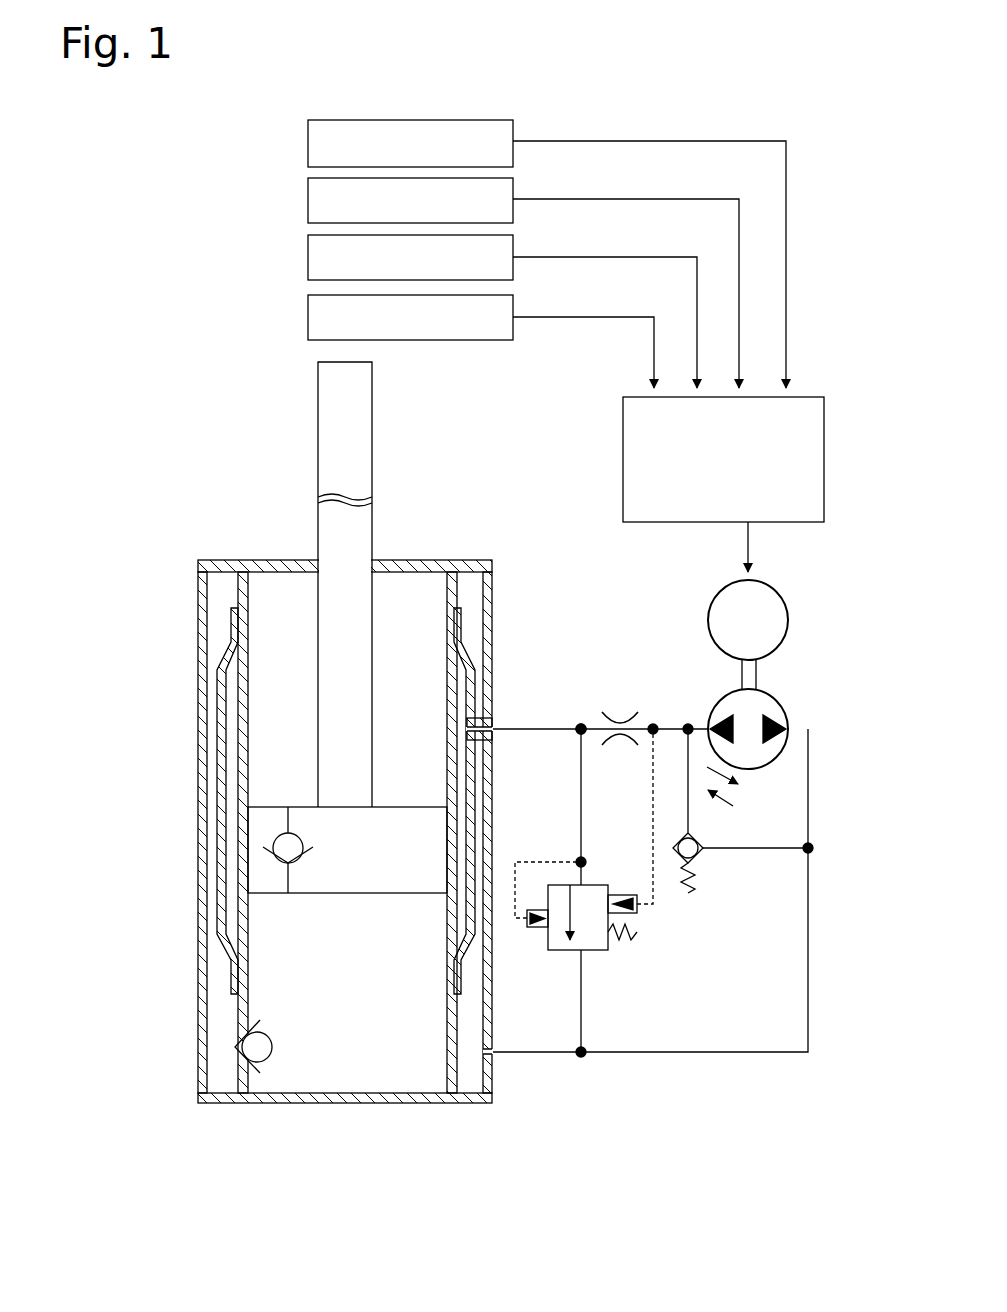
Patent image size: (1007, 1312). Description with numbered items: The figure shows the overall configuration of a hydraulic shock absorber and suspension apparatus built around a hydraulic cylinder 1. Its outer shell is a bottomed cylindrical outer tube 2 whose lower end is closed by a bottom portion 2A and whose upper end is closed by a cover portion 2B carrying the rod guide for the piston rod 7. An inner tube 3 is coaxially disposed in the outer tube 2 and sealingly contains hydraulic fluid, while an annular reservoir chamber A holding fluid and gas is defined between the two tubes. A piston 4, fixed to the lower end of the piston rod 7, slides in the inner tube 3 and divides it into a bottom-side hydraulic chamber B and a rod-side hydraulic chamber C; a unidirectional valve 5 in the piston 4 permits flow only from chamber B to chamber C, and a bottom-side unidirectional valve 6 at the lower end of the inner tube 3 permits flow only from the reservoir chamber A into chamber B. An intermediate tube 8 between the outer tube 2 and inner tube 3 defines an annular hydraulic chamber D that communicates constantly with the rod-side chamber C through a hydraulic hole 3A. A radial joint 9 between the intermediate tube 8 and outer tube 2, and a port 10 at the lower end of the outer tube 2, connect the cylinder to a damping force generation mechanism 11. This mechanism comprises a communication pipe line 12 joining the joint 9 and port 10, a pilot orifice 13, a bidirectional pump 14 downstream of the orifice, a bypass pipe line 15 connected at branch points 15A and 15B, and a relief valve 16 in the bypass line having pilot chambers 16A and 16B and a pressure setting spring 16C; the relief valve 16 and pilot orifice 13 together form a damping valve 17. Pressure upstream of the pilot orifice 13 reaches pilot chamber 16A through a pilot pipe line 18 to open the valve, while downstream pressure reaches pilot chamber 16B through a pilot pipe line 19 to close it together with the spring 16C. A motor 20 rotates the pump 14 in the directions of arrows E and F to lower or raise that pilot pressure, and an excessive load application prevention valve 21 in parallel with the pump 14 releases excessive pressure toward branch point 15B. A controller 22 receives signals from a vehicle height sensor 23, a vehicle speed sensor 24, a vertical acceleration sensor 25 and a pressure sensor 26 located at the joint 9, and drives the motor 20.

The hydraulic cylinder 1 is at (275, 545).
The outer tube 2 is at (198, 650).
The bottom portion 2A is at (350, 1105).
The cover portion 2B is at (402, 562).
The inner tube 3 is at (245, 753).
The hydraulic hole 3A is at (472, 647).
The piston 4 is at (326, 877).
The unidirectional valve 5 is at (284, 849).
The bottom-side unidirectional valve 6 is at (250, 1040).
The piston rod 7 is at (358, 432).
The intermediate tube 8 is at (219, 827).
The joint 9 is at (490, 717).
The port 10 is at (495, 1056).
The damping force generation mechanism 11 is at (610, 683).
The communication pipe line 12 is at (755, 1050).
The pilot orifice 13 is at (620, 722).
The pump 14 is at (783, 705).
The bypass pipe line 15 is at (580, 790).
The branch point 15A is at (580, 722).
The branch point 15B is at (585, 1058).
The relief valve 16 is at (590, 952).
The pilot chamber 16A is at (543, 928).
The pilot chamber 16B is at (622, 895).
The pressure setting spring 16C is at (637, 932).
The damping valve 17 is at (561, 958).
The pilot pipe line 18 is at (508, 860).
The pilot pipe line 19 is at (653, 813).
The motor 20 is at (712, 600).
The excessive load application prevention valve 21 is at (700, 857).
The controller 22 is at (623, 456).
The vehicle height sensor 23 is at (308, 143).
The vehicle speed sensor 24 is at (308, 201).
The vertical acceleration sensor 25 is at (308, 259).
The pressure sensor 26 is at (308, 319).
The reservoir chamber A is at (458, 1029).
The bottom-side hydraulic chamber B is at (340, 1014).
The rod-side hydraulic chamber C is at (394, 701).
The annular hydraulic chamber D is at (493, 807).
The arrow E is at (737, 785).
The arrow F is at (731, 809).